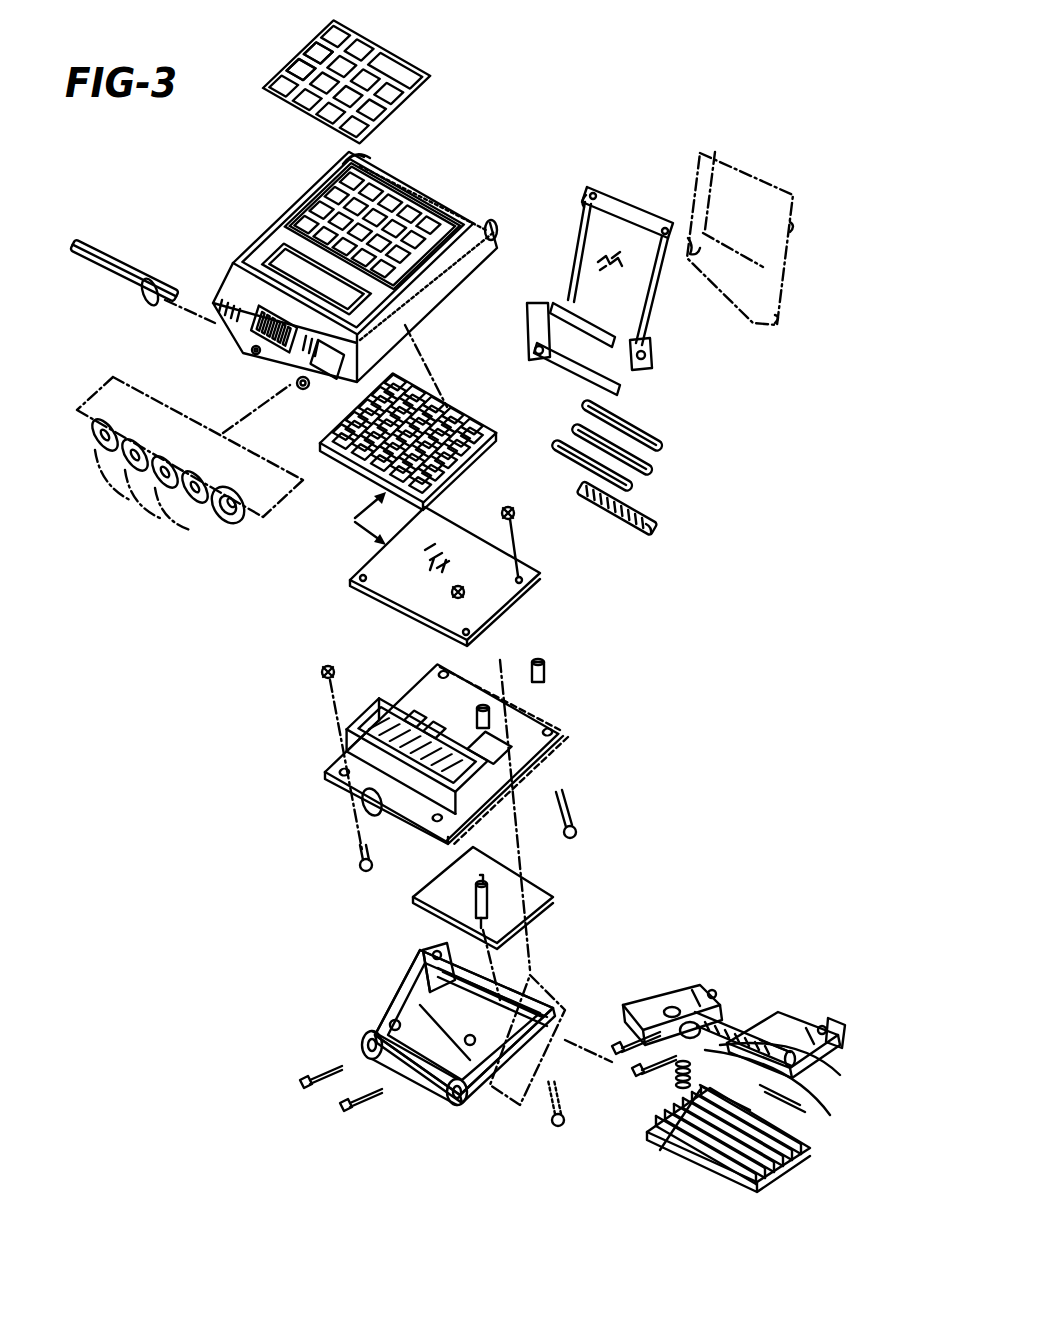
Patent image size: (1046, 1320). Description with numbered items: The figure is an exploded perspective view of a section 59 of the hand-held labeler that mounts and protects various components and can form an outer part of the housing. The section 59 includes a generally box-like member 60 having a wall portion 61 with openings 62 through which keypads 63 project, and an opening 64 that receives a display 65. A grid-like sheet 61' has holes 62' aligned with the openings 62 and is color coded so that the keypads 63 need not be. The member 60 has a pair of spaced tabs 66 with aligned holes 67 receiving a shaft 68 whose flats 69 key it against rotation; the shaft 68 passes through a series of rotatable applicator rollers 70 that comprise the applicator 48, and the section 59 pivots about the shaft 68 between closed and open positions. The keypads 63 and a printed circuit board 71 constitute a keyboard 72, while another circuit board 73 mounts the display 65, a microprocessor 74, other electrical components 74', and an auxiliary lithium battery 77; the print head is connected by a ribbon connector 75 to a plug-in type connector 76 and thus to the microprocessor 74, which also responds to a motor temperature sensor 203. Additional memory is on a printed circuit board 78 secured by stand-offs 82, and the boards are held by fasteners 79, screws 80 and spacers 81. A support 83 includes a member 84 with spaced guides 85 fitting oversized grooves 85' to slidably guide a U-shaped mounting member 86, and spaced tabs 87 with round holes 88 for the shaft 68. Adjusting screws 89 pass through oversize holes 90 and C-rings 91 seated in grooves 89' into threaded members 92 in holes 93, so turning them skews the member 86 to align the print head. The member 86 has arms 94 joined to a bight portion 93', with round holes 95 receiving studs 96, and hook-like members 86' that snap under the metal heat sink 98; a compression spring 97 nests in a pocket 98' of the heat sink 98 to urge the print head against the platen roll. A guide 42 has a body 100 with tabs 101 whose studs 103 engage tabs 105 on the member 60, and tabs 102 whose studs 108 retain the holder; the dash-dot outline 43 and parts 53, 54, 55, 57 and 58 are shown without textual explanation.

The guide 42 is at (645, 318).
The frame outline 43 is at (760, 175).
The applicator 48 is at (229, 535).
The spring 53 is at (638, 432).
The spring 54 is at (660, 458).
The rod 55 is at (563, 440).
The hatched bar 57 is at (640, 503).
The tab 58 is at (647, 530).
The section 59 is at (490, 238).
The box-like member 60 is at (430, 298).
The wall portion 61 is at (344, 226).
The grid-like sheet 61' is at (377, 81).
The openings 62 is at (388, 203).
The holes 62' is at (263, 82).
The keypads 63 is at (450, 410).
The opening 64 is at (283, 250).
The display 65 is at (388, 735).
The tabs 66 is at (240, 348).
The holes 67 is at (283, 366).
The shaft 68 is at (96, 247).
The flats 69 is at (150, 284).
The applicator rollers 70 is at (200, 527).
The printed circuit board 71 is at (456, 535).
The keyboard 72 is at (352, 518).
The circuit board 73 is at (392, 695).
The microprocessor 74 is at (502, 787).
The electrical components 74' is at (414, 681).
The ribbon connector 75 is at (832, 1046).
The plug-in type connector 76 is at (500, 690).
The auxiliary lithium battery 77 is at (358, 802).
The printed circuit board 78 is at (425, 893).
The fasteners 79 is at (508, 505).
The screws 80 is at (577, 815).
The spacers 81 is at (492, 722).
The stand-offs 82 is at (470, 894).
The support 83 is at (390, 992).
The member 84 is at (485, 1105).
The guides 85 is at (480, 1018).
The grooves 85' is at (793, 1079).
The mounting member 86 is at (672, 988).
The hook-like members 86' is at (652, 1134).
The tabs 87 is at (360, 1043).
The round holes 88 is at (395, 1090).
The adjusting screws 89 is at (302, 1104).
The grooves 89' is at (298, 1122).
The oversize holes 90 is at (382, 1024).
The C-rings 91 is at (488, 1010).
The threaded members 92 is at (618, 1062).
The holes 93 is at (743, 1021).
The bight portion 93' is at (778, 992).
The arms 94 is at (696, 988).
The round holes 95 is at (716, 990).
The studs 96 is at (805, 1118).
The compression spring 97 is at (678, 1084).
The heat sink 98 is at (728, 1158).
The pocket 98' is at (710, 1157).
The body 100 is at (598, 250).
The tabs 101 is at (668, 228).
The tabs 102 is at (620, 330).
The studs 103 is at (584, 200).
The tabs 105 is at (412, 170).
The studs 108 is at (525, 305).
The motor temperature sensor 203 is at (552, 748).